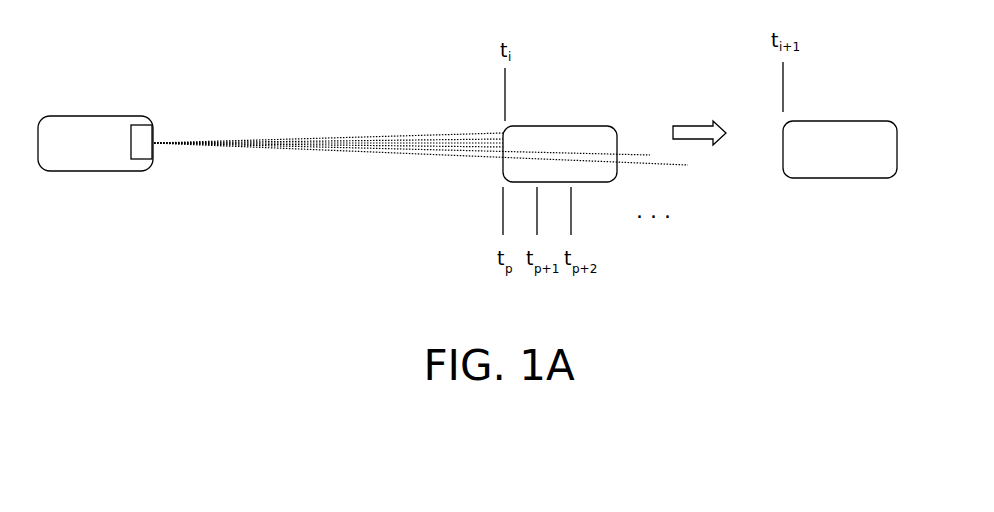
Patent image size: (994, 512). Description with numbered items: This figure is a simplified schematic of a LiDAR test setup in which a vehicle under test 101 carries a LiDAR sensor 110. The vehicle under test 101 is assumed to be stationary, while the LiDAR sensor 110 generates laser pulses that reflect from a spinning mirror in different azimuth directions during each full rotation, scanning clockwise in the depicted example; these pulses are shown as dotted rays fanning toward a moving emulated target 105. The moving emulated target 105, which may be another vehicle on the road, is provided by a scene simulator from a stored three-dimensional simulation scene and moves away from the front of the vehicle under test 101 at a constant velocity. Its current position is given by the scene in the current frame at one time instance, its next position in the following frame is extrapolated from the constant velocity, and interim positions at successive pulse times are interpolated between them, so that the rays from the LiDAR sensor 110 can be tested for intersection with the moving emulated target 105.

The vehicle under test 101 is at (72, 156).
The LiDAR sensor 110 is at (175, 106).
The moving emulated target 105 is at (707, 110).